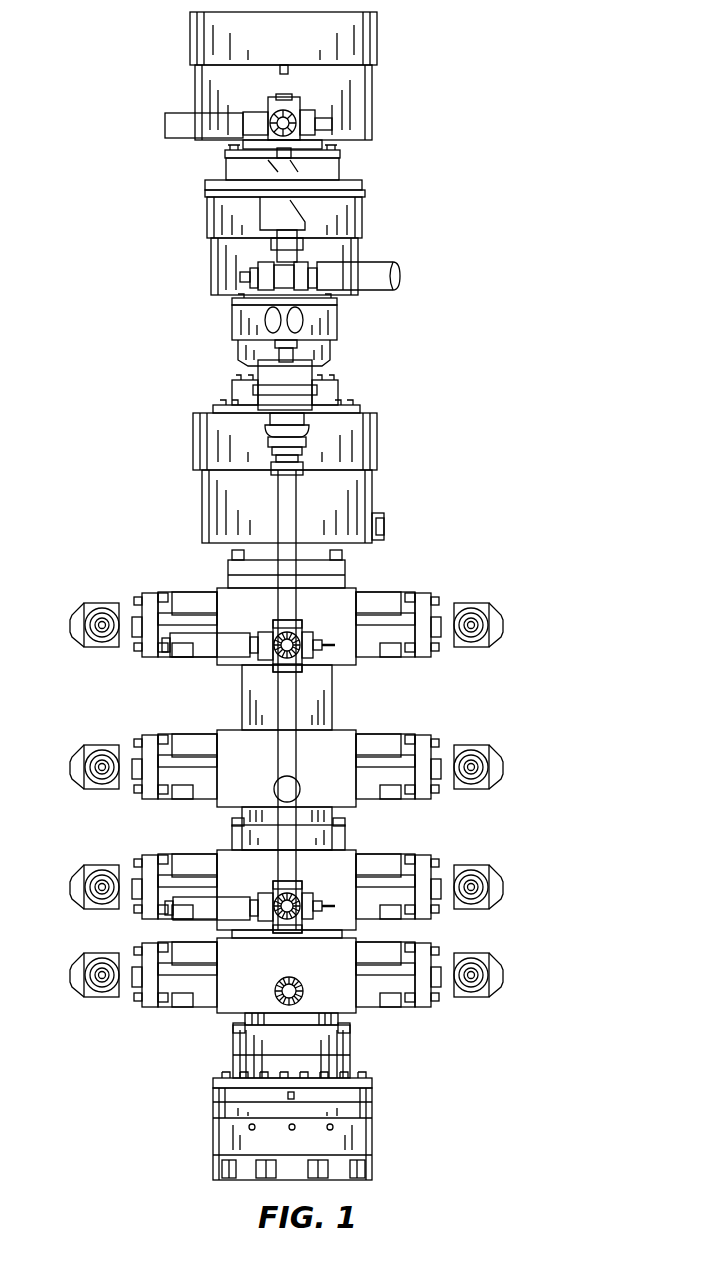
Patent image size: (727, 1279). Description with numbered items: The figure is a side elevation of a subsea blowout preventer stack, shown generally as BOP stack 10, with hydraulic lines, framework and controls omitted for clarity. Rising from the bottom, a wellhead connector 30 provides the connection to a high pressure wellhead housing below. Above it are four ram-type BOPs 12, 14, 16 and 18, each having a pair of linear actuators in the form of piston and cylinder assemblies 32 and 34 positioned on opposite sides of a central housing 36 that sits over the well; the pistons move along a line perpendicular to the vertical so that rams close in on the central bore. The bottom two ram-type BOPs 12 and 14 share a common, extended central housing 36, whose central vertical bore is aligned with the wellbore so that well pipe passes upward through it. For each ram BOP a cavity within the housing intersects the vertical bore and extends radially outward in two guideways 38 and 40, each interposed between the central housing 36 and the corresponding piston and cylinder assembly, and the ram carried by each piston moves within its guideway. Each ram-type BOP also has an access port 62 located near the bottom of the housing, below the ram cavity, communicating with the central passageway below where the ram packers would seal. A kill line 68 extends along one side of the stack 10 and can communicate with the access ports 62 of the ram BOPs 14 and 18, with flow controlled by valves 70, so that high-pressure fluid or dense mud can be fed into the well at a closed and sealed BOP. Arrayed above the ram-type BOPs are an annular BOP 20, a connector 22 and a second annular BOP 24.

The BOP stack 10 is at (525, 357).
The ram-type BOP 12 is at (368, 950).
The ram-type BOP 14 is at (367, 852).
The ram-type BOP 16 is at (367, 732).
The ram-type BOP 18 is at (367, 590).
The annular BOP 20 is at (350, 487).
The connector 22 is at (350, 218).
The second annular BOP 24 is at (340, 97).
The wellhead connector 30 is at (235, 1137).
The piston and cylinder assembly 32 is at (132, 983).
The piston and cylinder assembly 34 is at (443, 977).
The central housing 36 is at (250, 934).
The guideway 38 is at (230, 1008).
The guideway 40 is at (352, 1007).
The access port 62 is at (273, 995).
The kill line 68 is at (283, 575).
The valve 70 is at (200, 650).